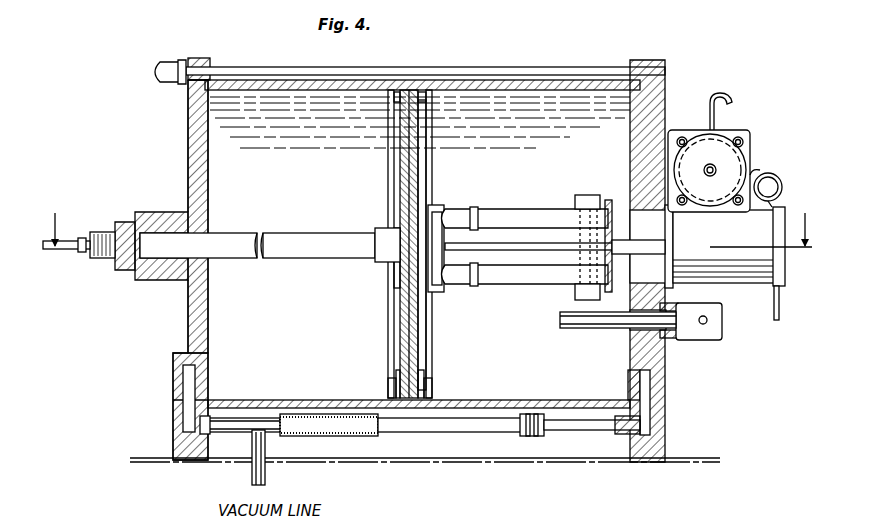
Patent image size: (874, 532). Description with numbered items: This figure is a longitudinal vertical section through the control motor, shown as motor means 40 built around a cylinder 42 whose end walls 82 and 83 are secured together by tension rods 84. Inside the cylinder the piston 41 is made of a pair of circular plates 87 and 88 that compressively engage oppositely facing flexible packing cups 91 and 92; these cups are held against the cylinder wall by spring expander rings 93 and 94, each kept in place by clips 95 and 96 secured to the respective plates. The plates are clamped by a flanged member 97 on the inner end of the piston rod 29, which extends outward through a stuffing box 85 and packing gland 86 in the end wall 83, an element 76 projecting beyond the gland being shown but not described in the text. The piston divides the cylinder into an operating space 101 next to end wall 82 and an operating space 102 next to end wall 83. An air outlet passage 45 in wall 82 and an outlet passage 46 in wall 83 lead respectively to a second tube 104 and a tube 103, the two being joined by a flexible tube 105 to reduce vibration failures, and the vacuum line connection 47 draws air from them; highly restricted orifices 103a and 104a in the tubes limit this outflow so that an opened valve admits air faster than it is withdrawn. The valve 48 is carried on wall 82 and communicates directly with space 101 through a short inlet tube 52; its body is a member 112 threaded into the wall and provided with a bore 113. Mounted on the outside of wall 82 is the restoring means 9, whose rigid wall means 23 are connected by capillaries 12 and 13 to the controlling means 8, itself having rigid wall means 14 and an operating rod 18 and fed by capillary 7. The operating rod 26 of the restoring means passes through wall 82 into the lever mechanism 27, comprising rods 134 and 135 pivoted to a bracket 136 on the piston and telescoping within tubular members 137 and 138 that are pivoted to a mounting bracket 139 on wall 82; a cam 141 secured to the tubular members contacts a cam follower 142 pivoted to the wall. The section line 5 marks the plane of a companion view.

The section line 5- 5 is at (437, 227).
The capillary 7 is at (727, 100).
The controlling means 8 is at (741, 128).
The restoring means 9 is at (745, 286).
The capillary 12 is at (776, 178).
The capillary 13 is at (781, 303).
The rigid wall means 14 is at (742, 148).
The operating or piston rod 18 is at (714, 168).
The rigid wall means 23 is at (729, 246).
The operating or piston rod 26 is at (668, 237).
The lever mechanism 27 is at (487, 212).
The piston rod 29 is at (245, 233).
The motor means 40 is at (415, 85).
The piston 41 is at (388, 208).
The cylinder 42 is at (500, 400).
The air outlet passage 45 is at (650, 390).
The outlet passage 46 is at (183, 395).
The vacuum line connection 47 is at (268, 478).
The valve 48 is at (690, 337).
The short inlet tube 52 is at (624, 330).
The rod 76 is at (72, 249).
The end wall 82 is at (663, 92).
The end wall 83 is at (188, 137).
The tension rods 84 is at (500, 67).
The stuffing box 85 is at (168, 262).
The packing gland 86 is at (130, 264).
The circular plate 87 is at (403, 172).
The circular plate 88 is at (418, 172).
The flexible packing cup 91 is at (402, 307).
The flexible packing cup 92 is at (410, 322).
The spring expander ring 93 is at (394, 385).
The spring expander ring 94 is at (430, 385).
The clips 95 is at (399, 375).
The clips 96 is at (421, 375).
The flanged member 97 is at (398, 276).
The operating space 101 is at (522, 345).
The operating space 102 is at (295, 313).
The tube 103 is at (240, 420).
The restricted orifice 103a is at (208, 434).
The second tube 104 is at (577, 432).
The restricted orifice 104a is at (630, 434).
The flexible tube 105 is at (430, 436).
The valve member 112 is at (714, 330).
The bore 113 is at (676, 308).
The rod 134 is at (465, 212).
The rod 135 is at (463, 284).
The bracket 136 is at (440, 290).
The tubular member 137 is at (516, 214).
The tubular member 138 is at (516, 284).
The mounting bracket 139 is at (590, 198).
The cam 141 is at (562, 247).
The cam follower 142 is at (608, 282).